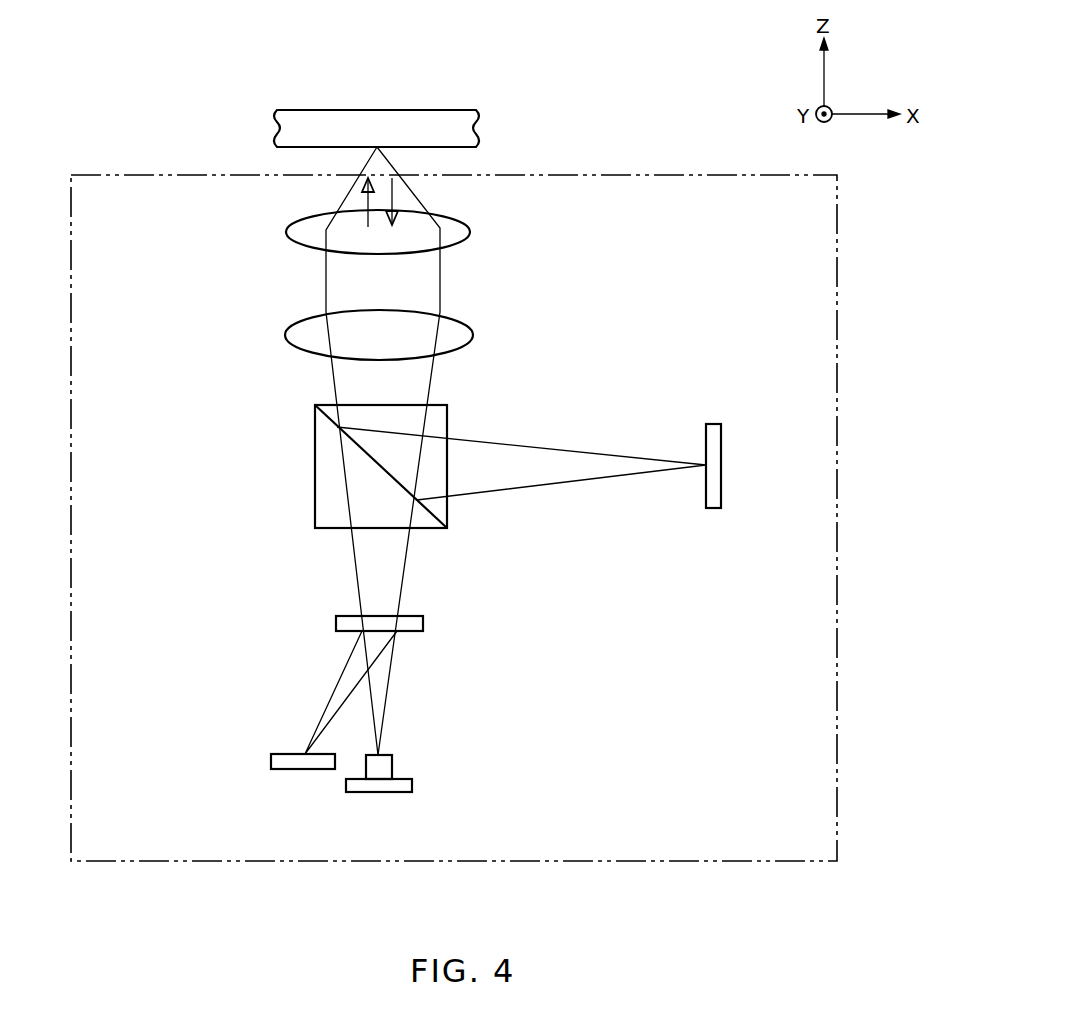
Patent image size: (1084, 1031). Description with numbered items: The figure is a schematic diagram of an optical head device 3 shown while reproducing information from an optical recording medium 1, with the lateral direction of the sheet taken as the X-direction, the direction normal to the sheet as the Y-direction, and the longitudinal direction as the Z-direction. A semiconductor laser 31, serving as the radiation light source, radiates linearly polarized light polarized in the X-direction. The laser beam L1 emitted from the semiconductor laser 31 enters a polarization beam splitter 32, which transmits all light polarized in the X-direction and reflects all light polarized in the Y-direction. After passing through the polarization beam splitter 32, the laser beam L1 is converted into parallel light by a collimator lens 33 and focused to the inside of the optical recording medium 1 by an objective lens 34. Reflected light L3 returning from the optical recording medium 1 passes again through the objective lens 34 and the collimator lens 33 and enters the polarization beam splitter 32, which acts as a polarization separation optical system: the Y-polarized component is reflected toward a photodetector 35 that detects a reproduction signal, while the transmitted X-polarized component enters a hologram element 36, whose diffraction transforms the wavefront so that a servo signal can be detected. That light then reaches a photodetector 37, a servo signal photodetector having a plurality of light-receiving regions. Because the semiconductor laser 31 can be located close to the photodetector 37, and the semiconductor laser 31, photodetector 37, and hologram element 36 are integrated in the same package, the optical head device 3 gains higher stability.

The optical recording medium 1 is at (427, 118).
The optical head device 3 is at (650, 175).
The semiconductor laser 31 is at (392, 765).
The polarization beam splitter 32 is at (315, 440).
The collimator lens 33 is at (464, 322).
The objective lens 34 is at (473, 236).
The photodetector 35 is at (713, 424).
The hologram element 36 is at (336, 621).
The photodetector 37 is at (271, 760).
The laser beam L1 is at (370, 198).
The reflected light L3 is at (390, 195).